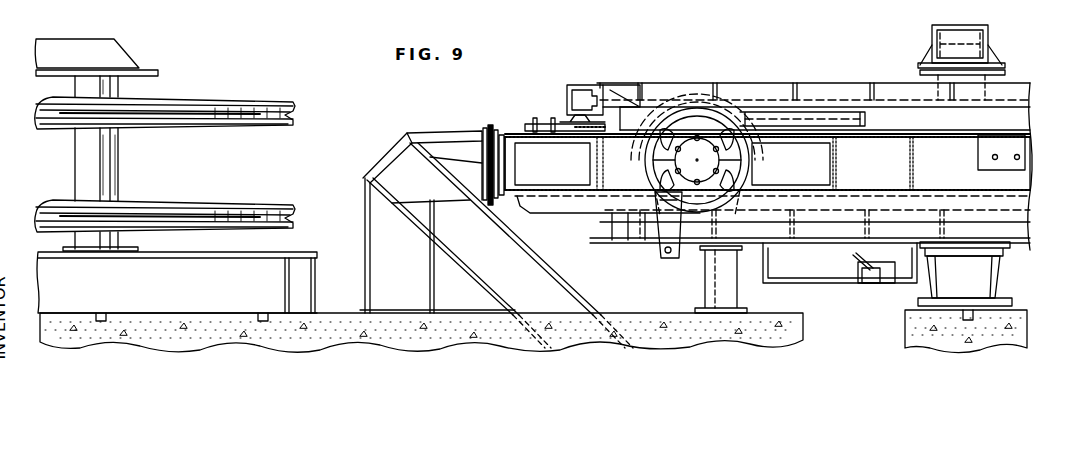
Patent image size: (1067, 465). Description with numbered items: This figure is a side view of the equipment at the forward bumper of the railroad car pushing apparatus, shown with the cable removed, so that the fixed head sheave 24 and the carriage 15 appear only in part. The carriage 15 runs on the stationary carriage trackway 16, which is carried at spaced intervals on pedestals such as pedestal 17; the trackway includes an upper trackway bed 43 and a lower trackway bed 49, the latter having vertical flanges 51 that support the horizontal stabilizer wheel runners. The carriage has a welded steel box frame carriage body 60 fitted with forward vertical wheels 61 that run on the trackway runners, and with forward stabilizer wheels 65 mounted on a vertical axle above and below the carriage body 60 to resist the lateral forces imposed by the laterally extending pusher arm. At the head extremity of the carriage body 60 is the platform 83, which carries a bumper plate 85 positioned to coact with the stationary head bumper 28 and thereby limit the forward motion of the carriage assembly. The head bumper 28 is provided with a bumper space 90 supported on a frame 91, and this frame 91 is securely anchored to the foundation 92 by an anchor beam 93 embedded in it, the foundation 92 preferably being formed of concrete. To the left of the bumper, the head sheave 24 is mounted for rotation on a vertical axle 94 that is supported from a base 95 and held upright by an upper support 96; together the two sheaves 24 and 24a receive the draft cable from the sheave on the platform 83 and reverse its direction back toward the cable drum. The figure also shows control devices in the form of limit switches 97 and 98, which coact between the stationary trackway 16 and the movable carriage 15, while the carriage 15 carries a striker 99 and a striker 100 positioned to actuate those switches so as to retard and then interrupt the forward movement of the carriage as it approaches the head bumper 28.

The carriage 15 is at (516, 125).
The carriage trackway 16 is at (654, 79).
The pedestal 17 is at (1004, 46).
The head sheave 24 is at (198, 100).
The sheave 24a is at (198, 207).
The head bumper 28 is at (379, 151).
The upper trackway bed 43 is at (665, 100).
The lower trackway bed 49 is at (626, 236).
The vertical flanges 51 is at (650, 240).
The carriage body 60 is at (1040, 110).
The forward vertical wheels 61 is at (708, 118).
The forward stabilizer wheels 65 is at (806, 110).
The platform 83 is at (520, 135).
The bumper plate 85 is at (508, 165).
The bumper space 90 is at (497, 125).
The frame 91 is at (450, 132).
The foundation 92 is at (652, 318).
The anchor beam 93 is at (528, 265).
The vertical axle 94 is at (112, 172).
The base 95 is at (300, 268).
The upper support 96 is at (125, 55).
The limit switch 97 is at (580, 92).
The limit switch 98 is at (885, 276).
The striker 99 is at (562, 124).
The striker 100 is at (667, 258).